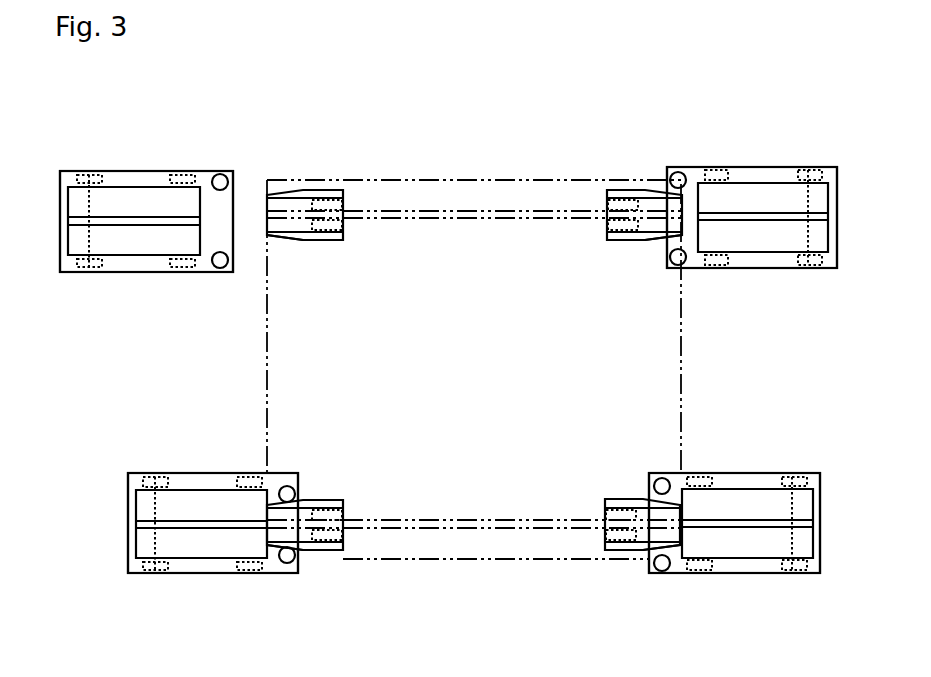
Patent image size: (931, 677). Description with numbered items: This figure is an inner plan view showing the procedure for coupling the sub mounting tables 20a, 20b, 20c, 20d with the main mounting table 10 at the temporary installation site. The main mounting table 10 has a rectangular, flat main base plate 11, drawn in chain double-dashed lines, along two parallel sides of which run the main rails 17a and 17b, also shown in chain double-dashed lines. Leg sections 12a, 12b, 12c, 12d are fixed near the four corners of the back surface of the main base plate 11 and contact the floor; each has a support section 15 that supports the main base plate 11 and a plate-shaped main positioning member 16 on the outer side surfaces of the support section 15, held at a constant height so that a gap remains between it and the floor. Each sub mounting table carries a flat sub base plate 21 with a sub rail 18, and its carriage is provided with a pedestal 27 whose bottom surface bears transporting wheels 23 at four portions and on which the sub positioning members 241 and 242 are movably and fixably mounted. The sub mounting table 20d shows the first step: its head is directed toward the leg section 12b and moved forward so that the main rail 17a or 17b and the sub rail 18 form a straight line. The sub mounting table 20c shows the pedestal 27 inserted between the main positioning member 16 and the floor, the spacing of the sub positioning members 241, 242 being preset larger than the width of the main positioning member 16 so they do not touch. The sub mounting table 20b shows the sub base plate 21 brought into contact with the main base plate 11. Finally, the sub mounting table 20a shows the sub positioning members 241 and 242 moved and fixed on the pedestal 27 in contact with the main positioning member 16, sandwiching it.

The main mounting table 10 is at (444, 167).
The main base plate 11 is at (683, 368).
The leg section 12a is at (344, 491).
The leg section 12b is at (605, 490).
The leg section 12c is at (606, 251).
The leg section 12d is at (342, 249).
The support section 15 is at (345, 203).
The main positioning member 16 is at (330, 240).
The main rail 17a is at (450, 222).
The main rail 17b is at (450, 520).
The sub rail 18 is at (68, 221).
The sub mounting table 20a is at (142, 599).
The sub mounting table 20b is at (793, 589).
The sub mounting table 20c is at (802, 289).
The sub mounting table 20d is at (94, 298).
The sub base plate 21 is at (68, 245).
The transporting wheel 23 is at (88, 172).
The sub positioning member 241 is at (673, 620).
The sub positioning member 242 is at (220, 270).
The pedestal 27 is at (61, 204).